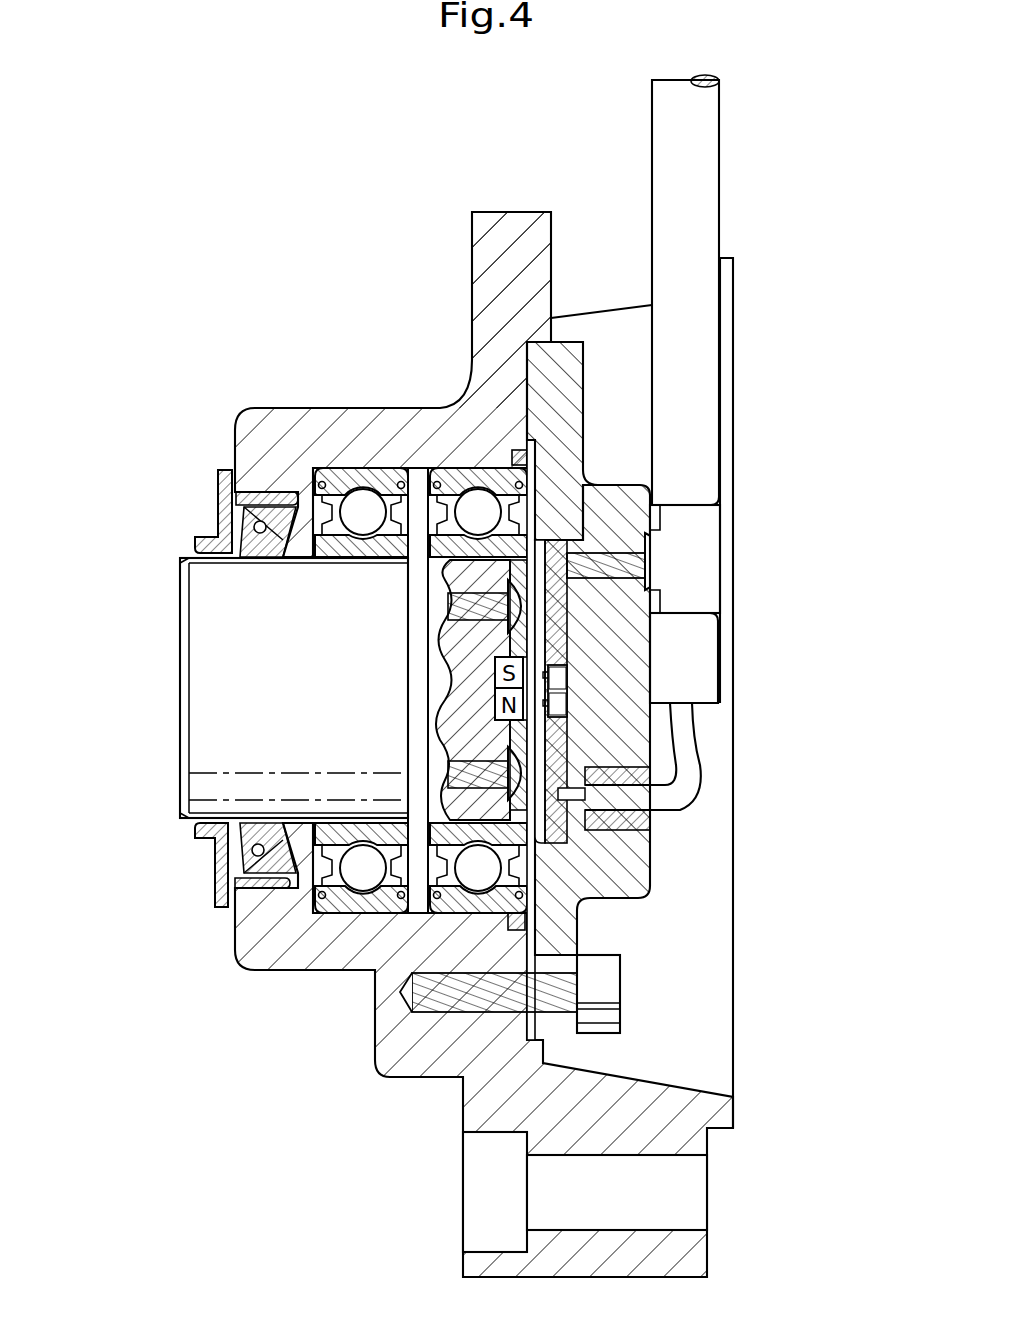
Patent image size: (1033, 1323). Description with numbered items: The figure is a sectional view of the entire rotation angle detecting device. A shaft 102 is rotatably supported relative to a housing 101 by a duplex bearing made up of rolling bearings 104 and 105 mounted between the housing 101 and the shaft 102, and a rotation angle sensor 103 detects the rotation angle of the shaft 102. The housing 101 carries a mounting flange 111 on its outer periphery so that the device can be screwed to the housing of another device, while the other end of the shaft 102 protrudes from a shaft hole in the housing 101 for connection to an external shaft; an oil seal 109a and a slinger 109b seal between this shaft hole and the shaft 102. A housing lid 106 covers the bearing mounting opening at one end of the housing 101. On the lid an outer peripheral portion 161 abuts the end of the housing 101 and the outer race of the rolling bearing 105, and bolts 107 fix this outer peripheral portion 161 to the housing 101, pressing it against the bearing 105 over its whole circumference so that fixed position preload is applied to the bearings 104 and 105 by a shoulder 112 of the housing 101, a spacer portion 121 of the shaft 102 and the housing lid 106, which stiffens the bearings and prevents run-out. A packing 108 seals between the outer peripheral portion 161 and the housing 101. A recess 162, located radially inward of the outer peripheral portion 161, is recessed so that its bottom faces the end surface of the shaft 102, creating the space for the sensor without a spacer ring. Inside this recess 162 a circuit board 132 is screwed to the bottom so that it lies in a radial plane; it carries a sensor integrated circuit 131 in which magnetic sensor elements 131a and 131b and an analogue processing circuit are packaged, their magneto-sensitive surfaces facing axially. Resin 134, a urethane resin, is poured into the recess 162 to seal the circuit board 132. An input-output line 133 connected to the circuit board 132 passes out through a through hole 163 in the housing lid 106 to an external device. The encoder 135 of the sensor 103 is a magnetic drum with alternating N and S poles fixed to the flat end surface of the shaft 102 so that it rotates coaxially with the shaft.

The housing 101 is at (388, 402).
The shaft 102 is at (227, 608).
The rotation angle sensor 103 is at (575, 745).
The rolling bearing 104 is at (348, 558).
The rolling bearing 105 is at (430, 557).
The housing lid 106 is at (652, 518).
The bolt 107 is at (456, 998).
The packing 108 is at (470, 928).
The oil seal 109a is at (243, 856).
The slinger 109b is at (213, 862).
The mounting flange 111 is at (514, 222).
The shoulder 112 is at (272, 487).
The spacer portion 121 is at (418, 722).
The sensor integrated circuit 131 is at (685, 647).
The magnetic sensor element 131a is at (560, 693).
The magnetic sensor element 131b is at (560, 668).
The circuit board 132 is at (603, 745).
The input-output line 133 is at (690, 748).
The resin 134 is at (555, 838).
The encoder 135 is at (645, 570).
The outer peripheral portion 161 is at (520, 345).
The recess 162 is at (653, 847).
The through hole 163 is at (653, 810).